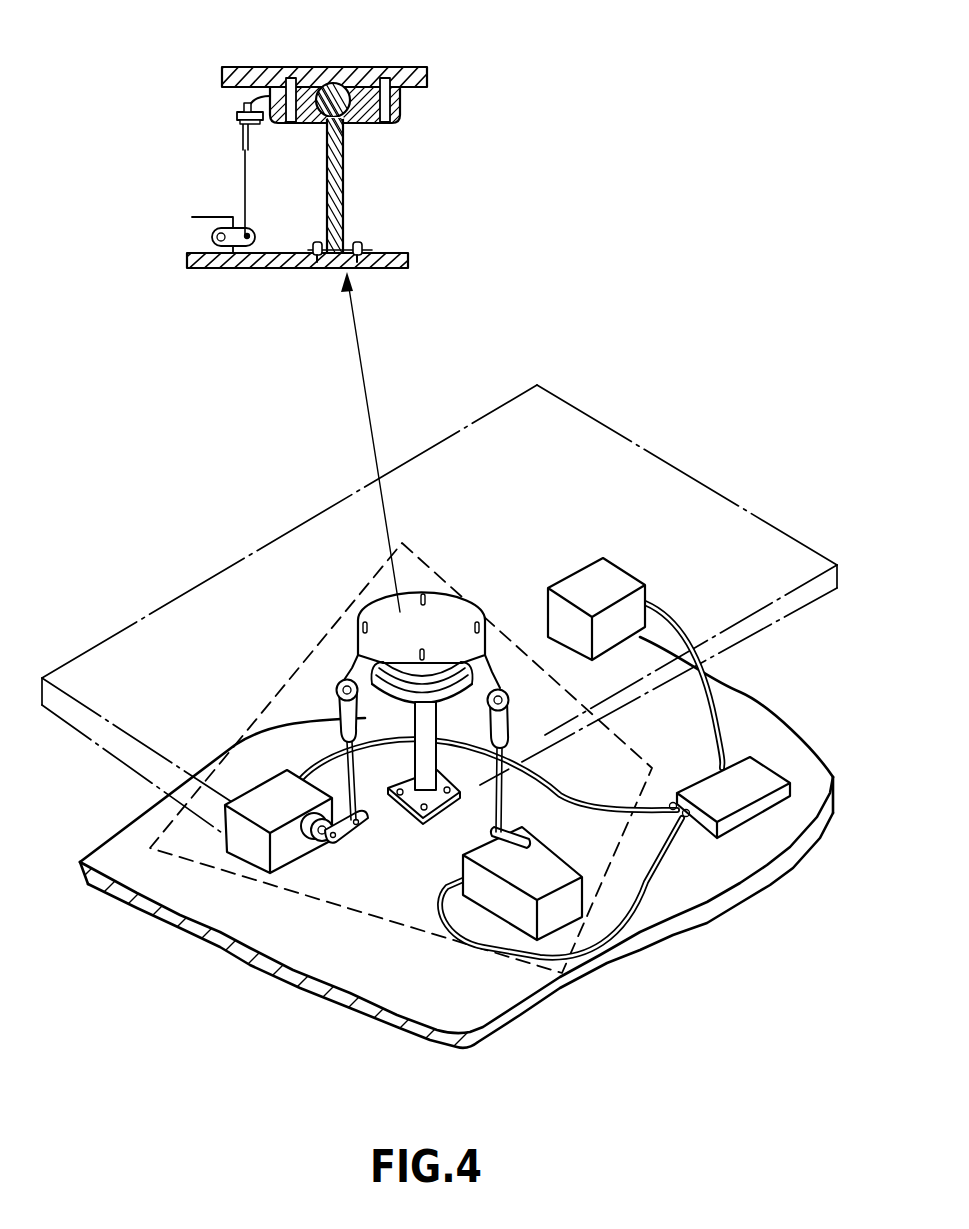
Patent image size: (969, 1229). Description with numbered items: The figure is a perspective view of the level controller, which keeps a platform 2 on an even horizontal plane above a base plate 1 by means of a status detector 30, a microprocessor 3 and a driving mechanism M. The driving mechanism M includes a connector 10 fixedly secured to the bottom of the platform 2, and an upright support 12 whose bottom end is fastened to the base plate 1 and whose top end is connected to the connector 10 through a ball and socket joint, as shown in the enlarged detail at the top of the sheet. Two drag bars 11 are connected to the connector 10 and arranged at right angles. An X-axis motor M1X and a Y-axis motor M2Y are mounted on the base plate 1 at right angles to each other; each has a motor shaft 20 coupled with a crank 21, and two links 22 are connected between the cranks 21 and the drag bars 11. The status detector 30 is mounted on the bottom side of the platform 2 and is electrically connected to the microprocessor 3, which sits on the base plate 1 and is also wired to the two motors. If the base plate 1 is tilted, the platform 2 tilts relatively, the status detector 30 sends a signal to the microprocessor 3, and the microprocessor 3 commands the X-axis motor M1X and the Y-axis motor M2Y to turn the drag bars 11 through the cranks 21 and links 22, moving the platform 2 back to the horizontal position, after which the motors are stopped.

The base plate 1 is at (247, 268).
The platform 2 is at (337, 67).
The microprocessor 3 is at (743, 790).
The connector 10 is at (400, 119).
The drag bars 11 is at (236, 116).
The upright support 12 is at (327, 187).
The motor shaft 20 is at (330, 842).
The crank 21 is at (343, 850).
The links 22 is at (245, 175).
The status detector 30 is at (617, 582).
The driving mechanism M is at (408, 540).
The X-axis motor M1X is at (207, 221).
The Y-axis motor M2Y is at (557, 920).